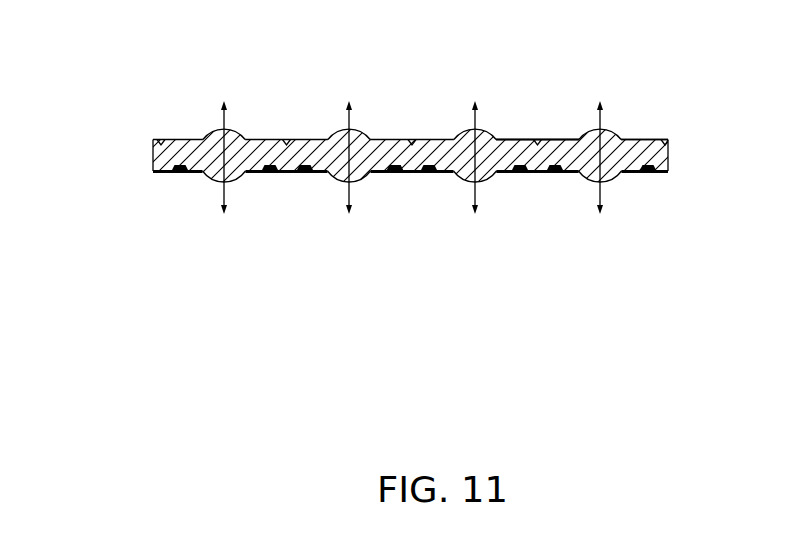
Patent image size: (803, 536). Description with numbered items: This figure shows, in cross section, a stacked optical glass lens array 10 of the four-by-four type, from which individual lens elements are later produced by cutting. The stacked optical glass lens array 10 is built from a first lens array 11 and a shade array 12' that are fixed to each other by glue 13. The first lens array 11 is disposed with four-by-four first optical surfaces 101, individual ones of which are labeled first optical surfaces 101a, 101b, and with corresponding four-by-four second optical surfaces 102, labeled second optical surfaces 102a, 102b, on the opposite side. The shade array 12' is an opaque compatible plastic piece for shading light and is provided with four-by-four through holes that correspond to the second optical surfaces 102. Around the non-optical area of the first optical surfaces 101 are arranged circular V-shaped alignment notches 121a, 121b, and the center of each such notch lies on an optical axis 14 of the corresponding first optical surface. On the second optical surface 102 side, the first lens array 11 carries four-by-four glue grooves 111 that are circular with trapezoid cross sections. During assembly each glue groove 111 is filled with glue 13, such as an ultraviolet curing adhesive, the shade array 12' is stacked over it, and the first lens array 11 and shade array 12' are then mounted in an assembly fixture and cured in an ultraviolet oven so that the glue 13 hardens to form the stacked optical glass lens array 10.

The stacked optical glass lens array 10 is at (140, 82).
The first lens array 11 is at (660, 157).
The shade array 12' is at (405, 203).
The glue 13 is at (431, 166).
The optical axis 14 is at (424, 148).
The first optical surfaces 101 is at (592, 101).
The first optical surface 101a is at (622, 139).
The first optical surface 101b is at (493, 138).
The second optical surfaces 102 is at (590, 210).
The second optical surface 102a is at (614, 178).
The second optical surface 102b is at (489, 178).
The glue grooves 111 is at (431, 166).
The alignment notch 121a is at (707, 75).
The alignment notch 121b is at (542, 138).